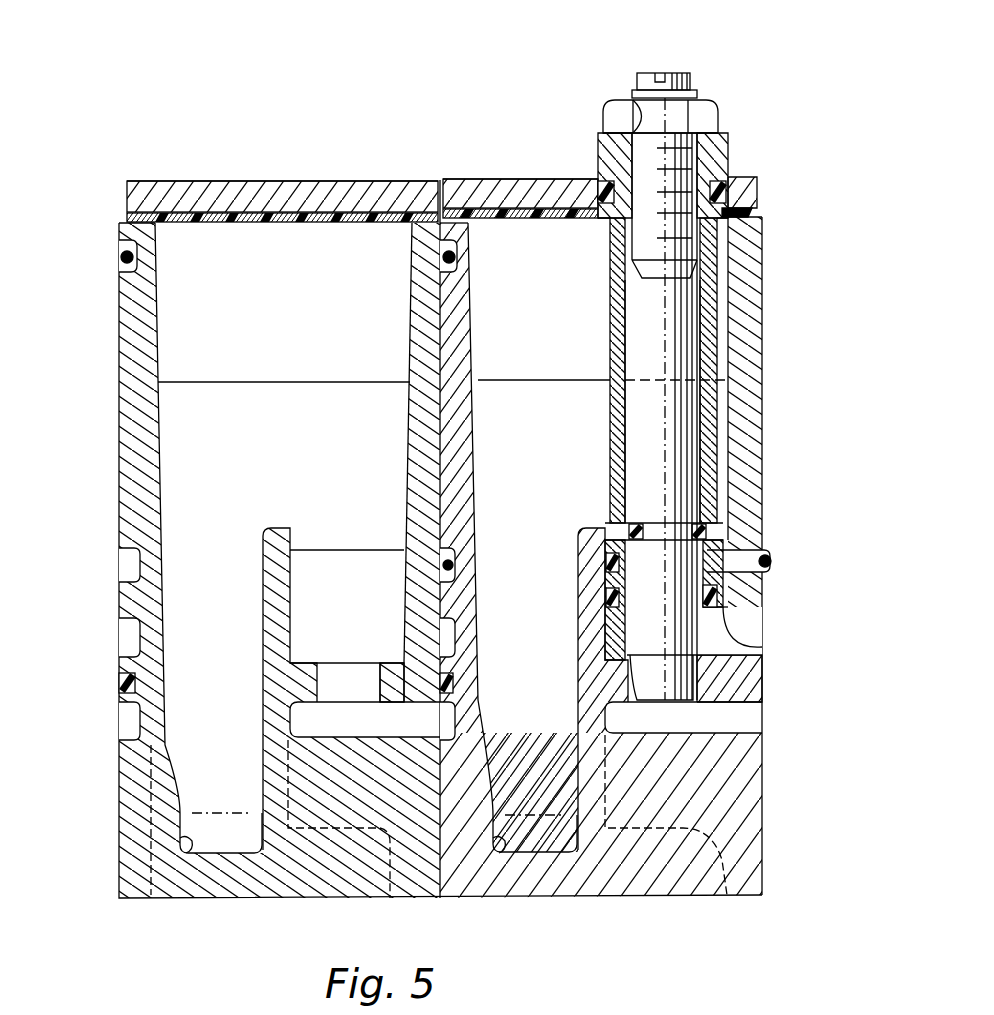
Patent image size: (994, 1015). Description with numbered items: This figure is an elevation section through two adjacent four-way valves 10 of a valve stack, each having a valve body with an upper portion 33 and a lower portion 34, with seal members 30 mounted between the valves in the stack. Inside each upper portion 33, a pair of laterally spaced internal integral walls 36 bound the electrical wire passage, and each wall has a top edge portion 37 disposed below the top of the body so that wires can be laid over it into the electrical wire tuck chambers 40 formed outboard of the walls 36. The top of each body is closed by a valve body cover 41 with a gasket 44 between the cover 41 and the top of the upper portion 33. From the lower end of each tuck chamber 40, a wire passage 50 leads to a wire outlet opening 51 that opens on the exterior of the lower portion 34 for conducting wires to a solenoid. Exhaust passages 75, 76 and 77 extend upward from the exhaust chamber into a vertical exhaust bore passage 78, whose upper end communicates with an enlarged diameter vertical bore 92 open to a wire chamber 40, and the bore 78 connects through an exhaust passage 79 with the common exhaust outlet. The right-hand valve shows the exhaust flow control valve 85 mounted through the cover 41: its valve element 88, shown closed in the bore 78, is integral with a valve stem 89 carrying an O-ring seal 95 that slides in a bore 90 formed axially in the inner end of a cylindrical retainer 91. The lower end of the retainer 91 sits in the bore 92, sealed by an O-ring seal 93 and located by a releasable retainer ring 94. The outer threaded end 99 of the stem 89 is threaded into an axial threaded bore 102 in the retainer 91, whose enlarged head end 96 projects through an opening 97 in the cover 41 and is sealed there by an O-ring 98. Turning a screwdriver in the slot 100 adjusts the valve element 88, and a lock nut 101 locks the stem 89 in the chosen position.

The four-way valve 10 is at (258, 176).
The valve body cover 41 is at (215, 192).
The gasket 44 is at (323, 192).
The seal member 30 is at (125, 258).
The valve body upper portion 33 is at (440, 539).
The top edge portion 37 is at (225, 382).
The internal integral wall 36 is at (290, 394).
The electrical wire tuck chamber 40 is at (282, 445).
The enlarged diameter vertical bore 92 is at (290, 590).
The releasable retainer ring 94 is at (440, 563).
The exhaust passage 79 is at (450, 620).
The wire passage 50 is at (262, 728).
The vertical exhaust bore passage 78 is at (325, 702).
The exhaust passage 77 is at (392, 700).
The exhaust passage 76 is at (292, 762).
The wire outlet opening 51 is at (192, 853).
The valve body lower portion 34 is at (255, 893).
The exhaust passage 75 is at (398, 880).
The outer threaded end 99 is at (655, 212).
The flow control valve cylindrical retainer 91 is at (612, 298).
The retainer bore 90 is at (620, 410).
The valve stem 89 is at (640, 452).
The O-ring seal 95 is at (705, 530).
The O-ring seal 93 is at (718, 597).
The valve element 88 is at (700, 672).
The slot 100 is at (663, 72).
The exhaust flow control valve 85 is at (708, 97).
The axial threaded bore 102 is at (635, 115).
The lock nut 101 is at (730, 106).
The enlarged head end 96 is at (718, 160).
The cover opening 97 is at (722, 195).
The O-ring 98 is at (745, 190).